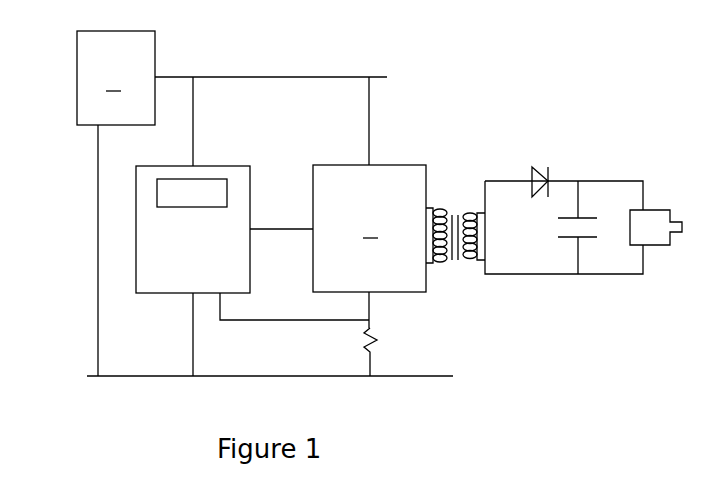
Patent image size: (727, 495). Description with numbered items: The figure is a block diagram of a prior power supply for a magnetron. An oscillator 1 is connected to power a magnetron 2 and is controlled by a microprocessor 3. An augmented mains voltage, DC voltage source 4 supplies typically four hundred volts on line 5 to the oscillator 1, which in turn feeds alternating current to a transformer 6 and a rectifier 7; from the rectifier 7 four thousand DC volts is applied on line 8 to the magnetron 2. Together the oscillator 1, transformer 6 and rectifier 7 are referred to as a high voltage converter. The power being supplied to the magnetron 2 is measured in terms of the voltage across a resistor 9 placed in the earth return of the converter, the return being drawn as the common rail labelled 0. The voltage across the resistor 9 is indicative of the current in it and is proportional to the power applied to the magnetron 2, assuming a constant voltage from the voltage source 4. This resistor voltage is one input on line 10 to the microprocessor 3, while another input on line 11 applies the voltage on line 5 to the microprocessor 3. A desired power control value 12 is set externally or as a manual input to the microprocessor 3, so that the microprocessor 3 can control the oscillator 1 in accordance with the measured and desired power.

The oscillator 1 is at (369, 202).
The magnetron 2 is at (648, 210).
The microprocessor 3 is at (222, 166).
The DC voltage source 4 is at (116, 203).
The line 5 is at (175, 77).
The transformer 6 is at (436, 206).
The rectifier 7 is at (535, 170).
The line 8 is at (620, 181).
The resistor 9 is at (375, 345).
The line 10 is at (298, 320).
The line 11 is at (193, 123).
The desired power control value 12 is at (190, 208).
The ground line 0 is at (252, 374).